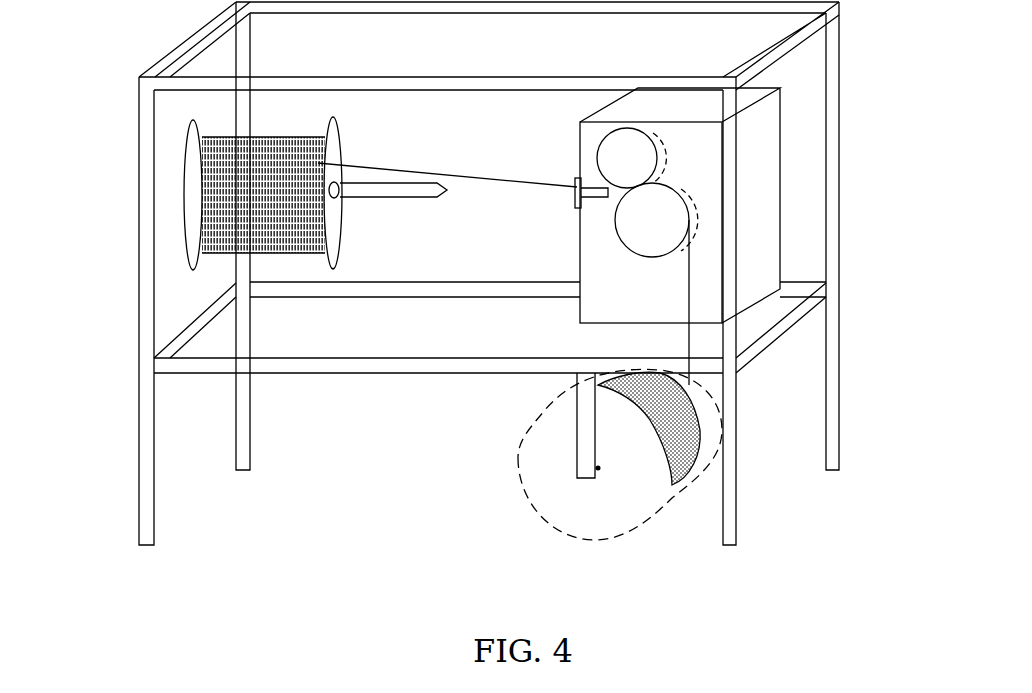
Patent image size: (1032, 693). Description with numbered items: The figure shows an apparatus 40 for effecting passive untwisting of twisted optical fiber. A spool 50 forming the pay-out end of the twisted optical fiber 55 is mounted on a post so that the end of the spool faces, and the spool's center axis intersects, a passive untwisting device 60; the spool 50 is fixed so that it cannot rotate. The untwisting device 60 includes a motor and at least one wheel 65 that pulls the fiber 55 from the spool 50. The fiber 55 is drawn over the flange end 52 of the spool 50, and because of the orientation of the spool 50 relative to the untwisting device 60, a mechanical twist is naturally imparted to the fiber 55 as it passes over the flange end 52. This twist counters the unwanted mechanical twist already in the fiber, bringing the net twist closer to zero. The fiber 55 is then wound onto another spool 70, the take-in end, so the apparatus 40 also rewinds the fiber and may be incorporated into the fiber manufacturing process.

The apparatus 40 is at (388, 463).
The spool 50 is at (195, 173).
The flange end 52 is at (334, 233).
The twisted optical fiber 55 is at (515, 167).
The passive untwisting device 60 is at (757, 190).
The wheel 65 is at (655, 218).
The spool 70 is at (632, 489).